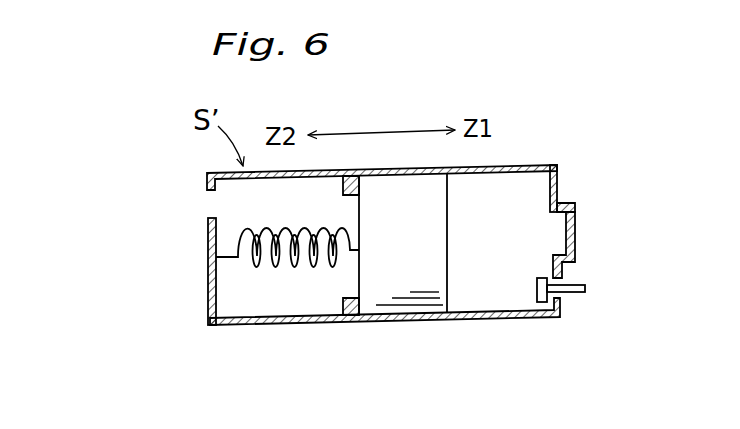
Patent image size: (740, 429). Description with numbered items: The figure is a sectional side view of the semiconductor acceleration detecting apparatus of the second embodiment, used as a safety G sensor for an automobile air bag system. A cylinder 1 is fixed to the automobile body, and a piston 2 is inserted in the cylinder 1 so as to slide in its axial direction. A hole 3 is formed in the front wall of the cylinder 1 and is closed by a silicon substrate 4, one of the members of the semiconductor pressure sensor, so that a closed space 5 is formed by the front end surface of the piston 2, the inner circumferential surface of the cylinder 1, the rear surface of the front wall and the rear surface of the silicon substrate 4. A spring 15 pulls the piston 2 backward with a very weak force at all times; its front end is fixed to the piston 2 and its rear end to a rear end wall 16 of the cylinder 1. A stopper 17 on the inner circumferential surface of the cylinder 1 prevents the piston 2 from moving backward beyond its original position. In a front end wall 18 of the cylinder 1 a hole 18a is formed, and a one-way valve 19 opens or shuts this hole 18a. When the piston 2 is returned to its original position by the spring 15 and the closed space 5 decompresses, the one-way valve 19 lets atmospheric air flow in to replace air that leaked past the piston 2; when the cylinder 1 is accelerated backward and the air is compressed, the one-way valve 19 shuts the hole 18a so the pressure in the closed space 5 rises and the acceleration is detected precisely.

The cylinder 1 is at (525, 166).
The piston 2 is at (385, 290).
The hole 3 is at (556, 210).
The silicon substrate 4 is at (572, 206).
The closed space 5 is at (495, 226).
The spring 15 is at (292, 266).
The rear end wall 16 is at (210, 288).
The stopper 17 is at (345, 303).
The front end wall 18 is at (560, 196).
The hole 18a is at (560, 281).
The one-way valve 19 is at (537, 288).